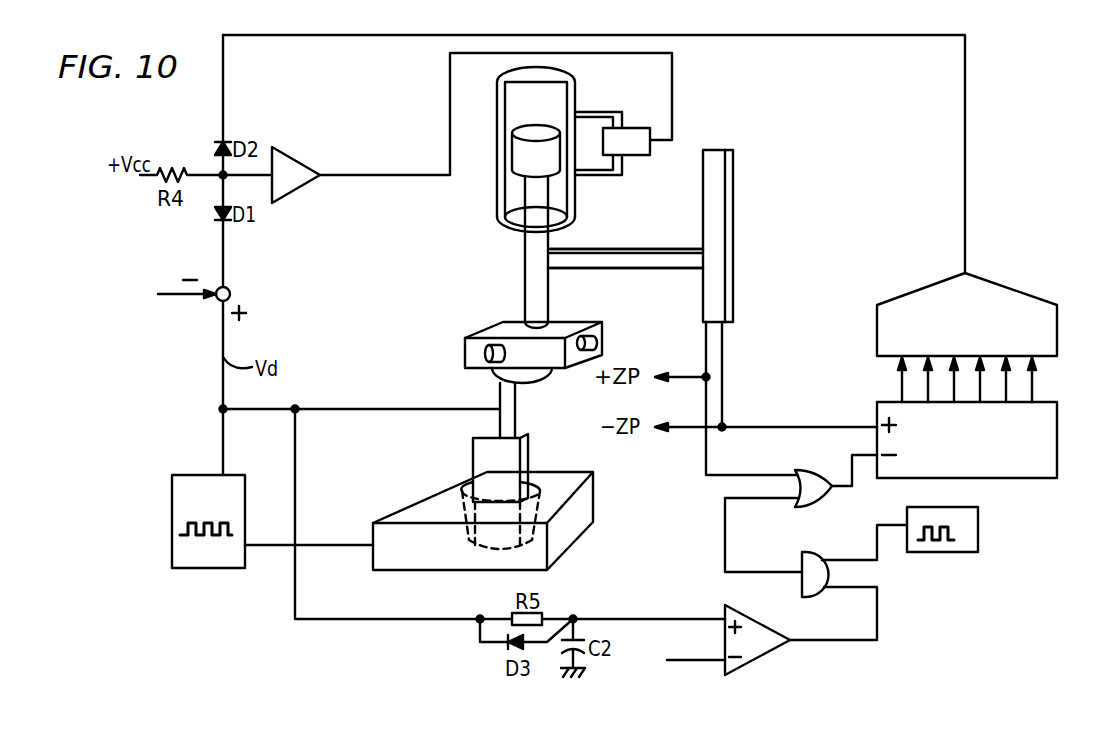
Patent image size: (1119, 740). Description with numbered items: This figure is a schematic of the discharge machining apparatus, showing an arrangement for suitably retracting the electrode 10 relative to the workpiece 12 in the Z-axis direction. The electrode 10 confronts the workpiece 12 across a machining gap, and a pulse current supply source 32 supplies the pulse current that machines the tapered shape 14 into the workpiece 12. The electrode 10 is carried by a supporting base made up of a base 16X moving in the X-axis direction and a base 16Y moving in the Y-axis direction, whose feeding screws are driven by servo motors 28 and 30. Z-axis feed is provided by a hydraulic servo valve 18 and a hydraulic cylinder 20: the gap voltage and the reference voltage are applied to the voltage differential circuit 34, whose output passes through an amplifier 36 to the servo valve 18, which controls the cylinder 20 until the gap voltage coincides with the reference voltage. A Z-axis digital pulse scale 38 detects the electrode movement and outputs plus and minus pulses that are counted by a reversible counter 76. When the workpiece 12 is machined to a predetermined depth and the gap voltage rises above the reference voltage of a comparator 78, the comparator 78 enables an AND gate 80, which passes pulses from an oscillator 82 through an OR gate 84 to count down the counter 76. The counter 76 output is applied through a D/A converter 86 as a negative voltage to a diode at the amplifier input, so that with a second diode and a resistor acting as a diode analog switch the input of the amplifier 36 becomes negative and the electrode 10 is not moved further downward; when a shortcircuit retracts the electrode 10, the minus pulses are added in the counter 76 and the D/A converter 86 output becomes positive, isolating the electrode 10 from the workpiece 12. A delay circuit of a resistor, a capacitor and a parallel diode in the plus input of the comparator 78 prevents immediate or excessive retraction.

The electrode 10 is at (510, 460).
The workpiece 12 is at (568, 535).
The tapered shape 14 is at (470, 495).
The base 16X is at (563, 322).
The base 16Y is at (626, 258).
The hydraulic servo valve 18 is at (637, 152).
The hydraulic cylinder 20 is at (577, 87).
The servo motor 28 is at (605, 338).
The servo motor 30 is at (485, 357).
The pulse current supply source 32 is at (185, 569).
The voltage differential circuit 34 is at (229, 291).
The amplifier 36 is at (304, 134).
The Z-axis digital pulse scale 38 is at (717, 193).
The reversible counter 76 is at (1057, 441).
The comparator 78 is at (777, 653).
The AND gate 80 is at (808, 566).
The oscillator 82 is at (978, 536).
The OR gate 84 is at (818, 496).
The D/A converter 86 is at (1057, 332).